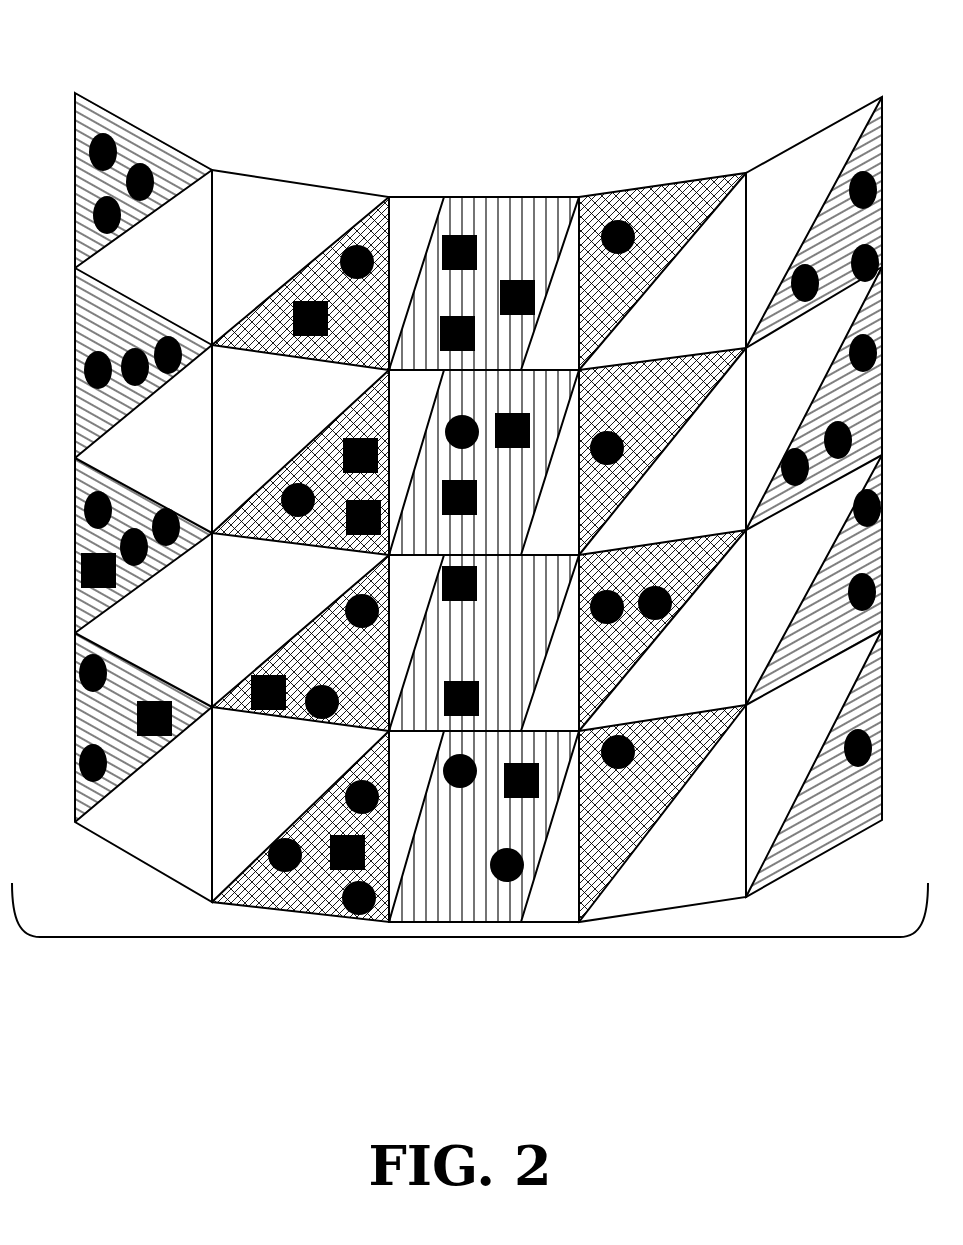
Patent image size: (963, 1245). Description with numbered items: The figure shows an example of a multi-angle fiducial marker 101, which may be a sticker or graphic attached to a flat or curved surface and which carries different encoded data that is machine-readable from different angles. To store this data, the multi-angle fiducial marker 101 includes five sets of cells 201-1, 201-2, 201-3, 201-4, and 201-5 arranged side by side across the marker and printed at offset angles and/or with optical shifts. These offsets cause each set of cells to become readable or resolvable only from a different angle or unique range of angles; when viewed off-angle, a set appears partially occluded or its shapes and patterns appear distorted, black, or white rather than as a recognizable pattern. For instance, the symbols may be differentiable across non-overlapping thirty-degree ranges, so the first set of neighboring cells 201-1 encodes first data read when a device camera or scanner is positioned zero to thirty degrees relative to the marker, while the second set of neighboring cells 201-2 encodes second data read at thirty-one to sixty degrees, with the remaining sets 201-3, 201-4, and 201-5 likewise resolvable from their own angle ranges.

The first set of neighboring cells 201-1 is at (140, 135).
The second set of neighboring cells 201-2 is at (302, 185).
The set of cells 201-3 is at (486, 195).
The set of cells 201-4 is at (653, 187).
The set of cells 201-5 is at (823, 130).
The multi-angle fiducial marker 101 is at (475, 940).